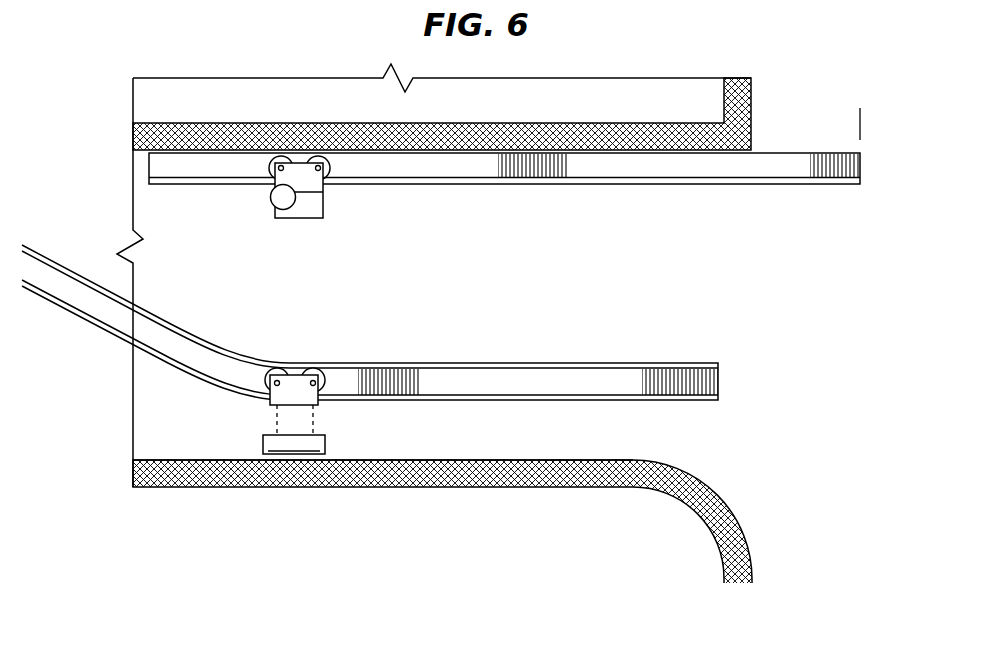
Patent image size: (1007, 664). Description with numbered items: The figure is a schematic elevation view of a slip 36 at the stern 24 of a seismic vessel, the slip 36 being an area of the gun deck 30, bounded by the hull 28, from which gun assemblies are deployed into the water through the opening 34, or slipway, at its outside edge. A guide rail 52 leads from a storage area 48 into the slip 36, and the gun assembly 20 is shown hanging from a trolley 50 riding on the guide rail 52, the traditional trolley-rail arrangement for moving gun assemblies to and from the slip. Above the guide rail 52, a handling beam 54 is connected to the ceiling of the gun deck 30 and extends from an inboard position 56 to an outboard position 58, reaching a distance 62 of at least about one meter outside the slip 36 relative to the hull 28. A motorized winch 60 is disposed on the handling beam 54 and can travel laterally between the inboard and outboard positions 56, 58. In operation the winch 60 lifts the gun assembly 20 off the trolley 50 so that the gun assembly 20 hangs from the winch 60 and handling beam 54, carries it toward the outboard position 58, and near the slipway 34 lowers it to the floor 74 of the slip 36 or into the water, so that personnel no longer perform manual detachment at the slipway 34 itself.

The gun assembly 20 is at (325, 444).
The stern 24 is at (743, 537).
The hull 28 is at (492, 487).
The gun deck 30 is at (620, 122).
The opening 34 is at (790, 309).
The slip 36 is at (615, 310).
The storage area 48 is at (86, 205).
The trolley 50 is at (293, 368).
The guide rail 52 is at (80, 303).
The handling beam 54 is at (535, 167).
The inboard position 56 is at (167, 168).
The outboard position 58 is at (845, 168).
The winch 60 is at (334, 214).
The distance 62 is at (753, 121).
The floor 74 is at (232, 460).